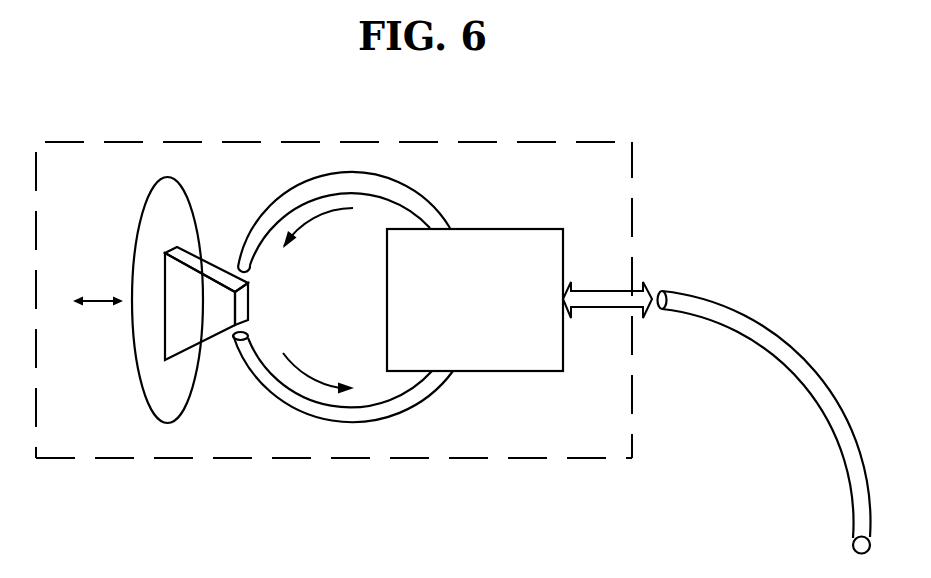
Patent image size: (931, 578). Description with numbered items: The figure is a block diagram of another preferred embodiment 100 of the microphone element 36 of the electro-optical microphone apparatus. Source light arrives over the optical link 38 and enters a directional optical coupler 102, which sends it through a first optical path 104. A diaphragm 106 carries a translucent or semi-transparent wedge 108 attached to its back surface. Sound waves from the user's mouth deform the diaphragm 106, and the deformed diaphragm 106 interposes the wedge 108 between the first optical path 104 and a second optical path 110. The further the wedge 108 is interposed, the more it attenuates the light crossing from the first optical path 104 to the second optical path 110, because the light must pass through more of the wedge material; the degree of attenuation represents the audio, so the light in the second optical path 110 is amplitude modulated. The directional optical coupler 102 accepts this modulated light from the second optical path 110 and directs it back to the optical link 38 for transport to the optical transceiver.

The preferred embodiment of the microphone element 100 is at (690, 157).
The microphone element 36 is at (193, 142).
The optical link 38 is at (765, 325).
The directional optical coupler 102 is at (456, 353).
The first optical path 104 is at (423, 192).
The diaphragm 106 is at (140, 238).
The wedge 108 is at (220, 321).
The second optical path 110 is at (423, 407).